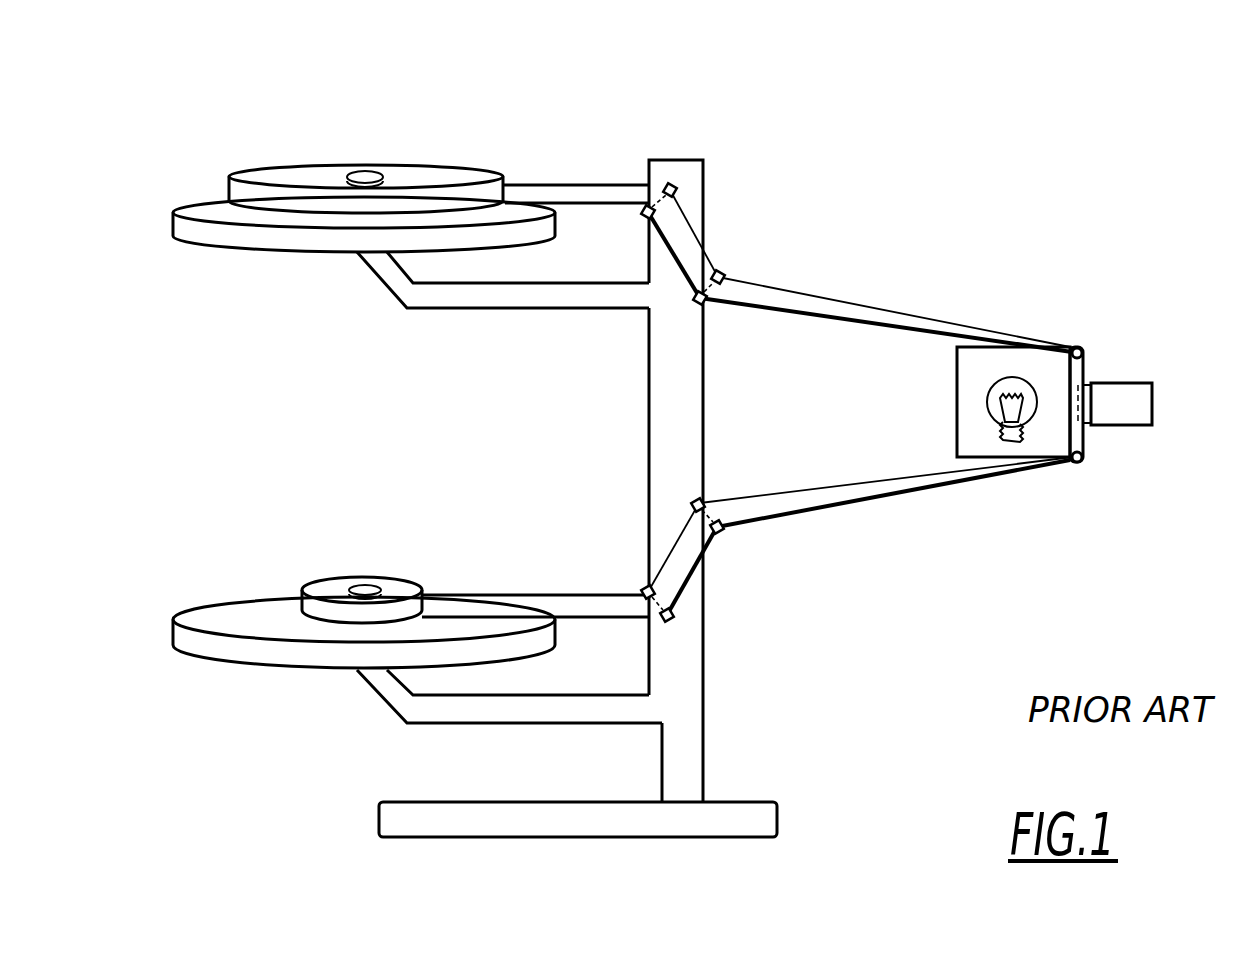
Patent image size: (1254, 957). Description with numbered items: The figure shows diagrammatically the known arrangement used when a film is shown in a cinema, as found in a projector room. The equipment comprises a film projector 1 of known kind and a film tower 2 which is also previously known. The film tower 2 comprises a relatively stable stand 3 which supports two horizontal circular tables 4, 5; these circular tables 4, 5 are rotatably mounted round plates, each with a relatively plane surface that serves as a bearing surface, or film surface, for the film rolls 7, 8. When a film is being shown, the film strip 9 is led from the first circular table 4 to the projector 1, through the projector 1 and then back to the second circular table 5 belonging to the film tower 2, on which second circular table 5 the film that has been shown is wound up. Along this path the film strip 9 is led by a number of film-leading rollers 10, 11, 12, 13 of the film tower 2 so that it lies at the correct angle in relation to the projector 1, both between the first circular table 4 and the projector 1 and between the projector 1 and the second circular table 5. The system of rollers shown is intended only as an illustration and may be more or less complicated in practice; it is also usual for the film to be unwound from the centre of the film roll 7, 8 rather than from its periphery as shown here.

The film projector 1 is at (1015, 367).
The film tower 2 is at (896, 361).
The stand 3 is at (680, 665).
The first circular table 4 is at (398, 220).
The second circular table 5 is at (412, 635).
The film roll 7 is at (442, 180).
The film roll 8 is at (405, 588).
The film strip 9 is at (852, 312).
The film-leading roller 10 is at (668, 183).
The film-leading roller 11 is at (720, 272).
The film-leading roller 12 is at (673, 616).
The film-leading roller 13 is at (722, 530).